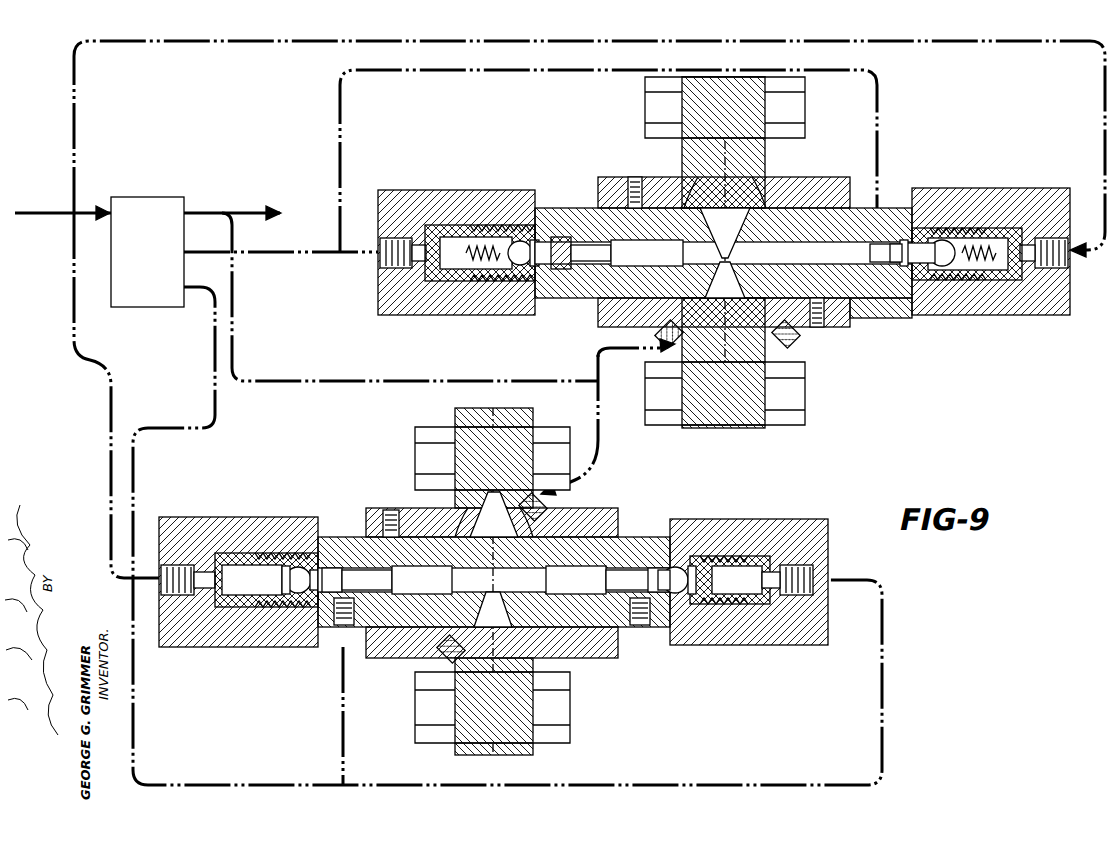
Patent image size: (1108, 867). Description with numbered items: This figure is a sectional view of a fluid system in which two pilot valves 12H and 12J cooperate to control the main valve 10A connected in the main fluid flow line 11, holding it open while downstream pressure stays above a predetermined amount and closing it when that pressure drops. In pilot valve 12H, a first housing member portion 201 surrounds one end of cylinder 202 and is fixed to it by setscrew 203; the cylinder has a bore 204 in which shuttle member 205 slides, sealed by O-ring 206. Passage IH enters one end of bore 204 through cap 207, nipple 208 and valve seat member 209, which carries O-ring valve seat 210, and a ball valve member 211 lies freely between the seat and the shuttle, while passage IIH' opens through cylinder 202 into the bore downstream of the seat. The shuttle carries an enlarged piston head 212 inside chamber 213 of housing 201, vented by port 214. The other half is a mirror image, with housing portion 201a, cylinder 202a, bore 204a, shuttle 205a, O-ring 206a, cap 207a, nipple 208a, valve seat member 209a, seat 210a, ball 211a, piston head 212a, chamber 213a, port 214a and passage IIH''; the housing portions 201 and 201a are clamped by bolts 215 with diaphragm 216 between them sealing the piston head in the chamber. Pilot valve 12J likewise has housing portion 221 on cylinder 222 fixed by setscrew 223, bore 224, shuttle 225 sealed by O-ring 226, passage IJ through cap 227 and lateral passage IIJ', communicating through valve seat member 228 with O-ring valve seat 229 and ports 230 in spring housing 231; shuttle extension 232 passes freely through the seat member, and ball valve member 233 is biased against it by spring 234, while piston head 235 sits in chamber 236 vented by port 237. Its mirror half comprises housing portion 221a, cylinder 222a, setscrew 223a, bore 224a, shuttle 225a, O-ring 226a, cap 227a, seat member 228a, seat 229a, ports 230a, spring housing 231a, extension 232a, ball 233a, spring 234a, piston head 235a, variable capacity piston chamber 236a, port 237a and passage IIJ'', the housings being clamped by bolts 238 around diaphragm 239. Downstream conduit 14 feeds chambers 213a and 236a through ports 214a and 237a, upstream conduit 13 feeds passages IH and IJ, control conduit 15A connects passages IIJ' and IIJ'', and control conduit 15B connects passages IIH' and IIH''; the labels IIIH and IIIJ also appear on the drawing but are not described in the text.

The main valve 10A is at (165, 200).
The main fluid flow line 11 is at (40, 212).
The upstream pressure conduit 13 is at (108, 416).
The downstream pressure conduit 14 is at (318, 372).
The main valve operator control conduit 15A is at (282, 254).
The control conduit 15B is at (202, 409).
The pilot valve 12J is at (925, 352).
The pilot valve 12H is at (312, 478).
The first housing member portion 201 is at (402, 645).
The housing member portion 201a is at (620, 512).
The cylinder 202 is at (494, 571).
The cylinder 202a is at (615, 560).
The setscrew 203 is at (391, 512).
The bore 204 is at (312, 592).
The bore 204a is at (666, 568).
The shuttle member 205 is at (395, 592).
The shuttle member 205a is at (640, 632).
The O-ring 206 is at (342, 626).
The O-ring 206a is at (642, 626).
The cap 207 is at (190, 530).
The cap 207a is at (796, 645).
The nipple 208 is at (235, 565).
The nipple 208a is at (762, 596).
The valve seat member 209 is at (286, 566).
The valve seat member 209a is at (692, 594).
The O-ring valve seat 210 is at (298, 566).
The O-ring valve seat 210a is at (680, 594).
The ball valve member 211 is at (278, 596).
The ball valve member 211a is at (705, 556).
The piston head 212 is at (450, 735).
The piston head 212a is at (500, 730).
The chamber 213 is at (462, 530).
The variable capacity piston chamber 213a is at (520, 515).
The port 214 is at (445, 655).
The port 214a is at (545, 505).
The bolts 215 is at (438, 440).
The diaphragm 216 is at (486, 505).
The first housing member portion 221 is at (805, 190).
The housing member portion 221a is at (670, 178).
The cylinder 222 is at (873, 310).
The cylinder 222a is at (640, 300).
The setscrew 223 is at (817, 327).
The setscrew 223a is at (635, 177).
The bore 224 is at (892, 300).
The bore 224a is at (565, 208).
The shuttle member 225 is at (840, 300).
The shuttle member 225a is at (650, 266).
The O-ring 226 is at (880, 244).
The O-ring 226a is at (590, 262).
The cap 227 is at (1030, 192).
The cap 227a is at (390, 192).
The valve seat member 228 is at (896, 244).
The valve seat member 228a is at (545, 243).
The O-ring valve seat 229 is at (906, 240).
The O-ring valve seat 229a is at (532, 240).
The ports 230 is at (950, 235).
The ports 230a is at (514, 262).
The spring housing 231 is at (1030, 240).
The spring housing 231a is at (448, 262).
The shuttle extension 232 is at (920, 263).
The shuttle extension 232a is at (561, 237).
The ball valve member 233 is at (946, 266).
The ball valve member 233a is at (490, 262).
The spring 234 is at (975, 262).
The spring 234a is at (400, 268).
The piston head 235 is at (765, 215).
The piston head 235a is at (640, 338).
The chamber 236 is at (748, 195).
The variable capacity piston chamber 236a is at (712, 208).
The port 237 is at (790, 340).
The port 237a is at (672, 345).
The bolts 238 is at (780, 420).
The diaphragm 239 is at (735, 380).
The passage IJ is at (1040, 262).
The passage IIJ' is at (898, 191).
The passage IIJ'' is at (431, 199).
The chamber III of valve J IIIJ is at (570, 237).
The passage IH is at (235, 590).
The passage IIH' is at (813, 577).
The passage IIH'' is at (321, 620).
The chamber III of valve H IIIH is at (660, 594).